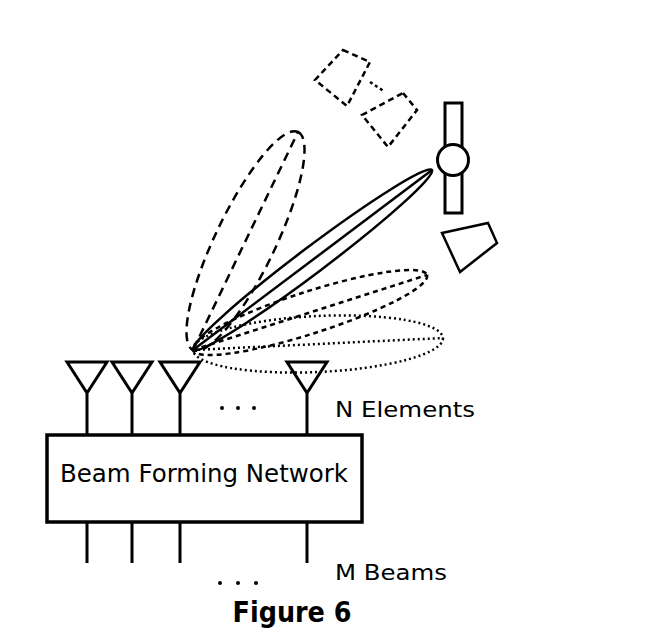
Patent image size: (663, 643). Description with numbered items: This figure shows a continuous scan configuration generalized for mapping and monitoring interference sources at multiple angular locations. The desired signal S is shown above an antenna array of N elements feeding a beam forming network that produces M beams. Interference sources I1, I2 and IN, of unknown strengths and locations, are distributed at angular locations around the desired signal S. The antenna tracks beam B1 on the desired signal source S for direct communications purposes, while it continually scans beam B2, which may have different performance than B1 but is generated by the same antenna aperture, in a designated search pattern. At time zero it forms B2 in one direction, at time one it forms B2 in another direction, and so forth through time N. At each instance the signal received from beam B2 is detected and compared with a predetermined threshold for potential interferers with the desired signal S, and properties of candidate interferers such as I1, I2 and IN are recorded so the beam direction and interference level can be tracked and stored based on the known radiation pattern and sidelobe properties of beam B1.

The tracking beam B1 is at (312, 259).
The scanning beam B2 is at (353, 237).
The desired signal S is at (469, 155).
The interference source N IN is at (353, 62).
The interference source 2 I2 is at (399, 106).
The interference source 1 I1 is at (487, 241).